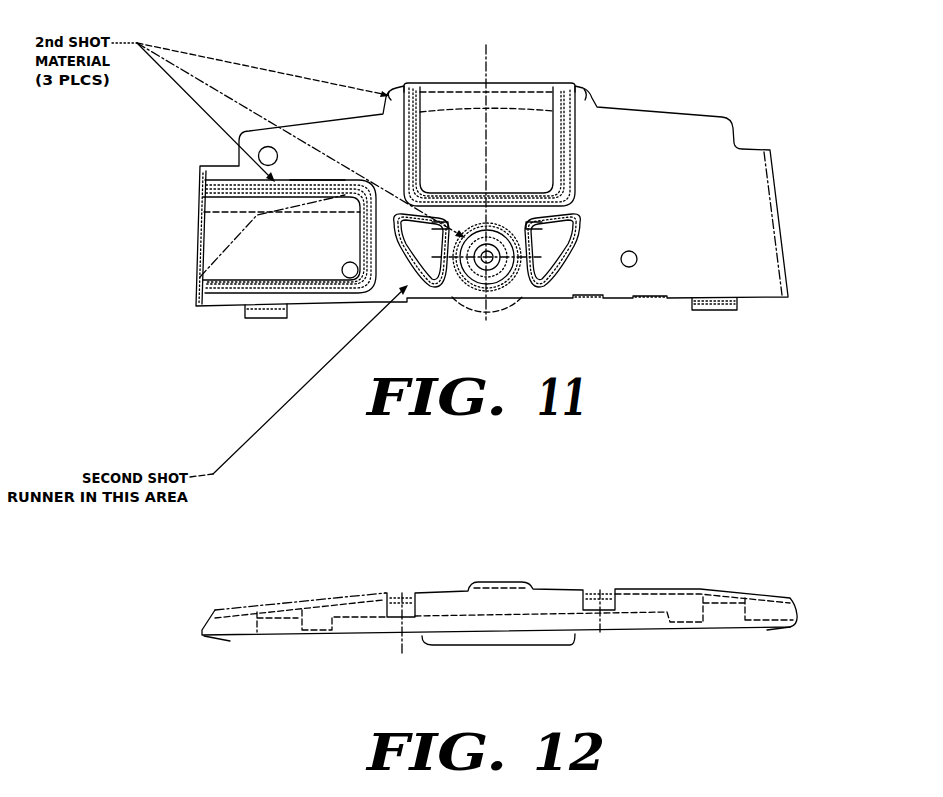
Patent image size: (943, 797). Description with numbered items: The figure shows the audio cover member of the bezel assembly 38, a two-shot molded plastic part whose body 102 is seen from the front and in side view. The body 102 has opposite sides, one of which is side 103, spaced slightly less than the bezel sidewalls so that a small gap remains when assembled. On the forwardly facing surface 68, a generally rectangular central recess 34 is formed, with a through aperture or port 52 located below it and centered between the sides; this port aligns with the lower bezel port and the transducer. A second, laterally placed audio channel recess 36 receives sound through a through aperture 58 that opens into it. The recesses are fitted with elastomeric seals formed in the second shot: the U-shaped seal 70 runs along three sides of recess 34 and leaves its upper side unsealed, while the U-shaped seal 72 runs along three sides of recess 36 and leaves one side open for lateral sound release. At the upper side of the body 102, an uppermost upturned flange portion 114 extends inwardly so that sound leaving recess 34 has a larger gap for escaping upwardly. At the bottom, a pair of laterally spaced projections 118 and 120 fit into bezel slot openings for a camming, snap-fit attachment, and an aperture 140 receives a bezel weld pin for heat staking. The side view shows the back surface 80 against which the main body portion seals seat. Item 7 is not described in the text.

In FIG. 11, the upturned flange portion 114 is at (449, 80).
In FIG. 12, the upturned flange portion 114 is at (470, 650).
In FIG. 11, the recess 34 is at (522, 110).
In FIG. 11, the seal 70 is at (567, 100).
In FIG. 11, the seal 72 is at (320, 182).
In FIG. 11, the aperture 140 is at (246, 131).
In FIG. 11, the audio channel recess 36 is at (228, 243).
In FIG. 11, the projection 120 is at (258, 328).
In FIG. 11, the through aperture 58 is at (345, 277).
In FIG. 11, the through aperture 52 is at (484, 262).
In FIG. 11, the hub ring 7 is at (492, 262).
In FIG. 11, the bezel assembly 38 is at (631, 268).
In FIG. 11, the projection 118 is at (725, 312).
In FIG. 11, the side 103 is at (776, 182).
In FIG. 12, the forwardly facing surface 68 is at (550, 590).
In FIG. 12, the body 102 is at (410, 636).
In FIG. 12, the back surface 80 is at (589, 634).